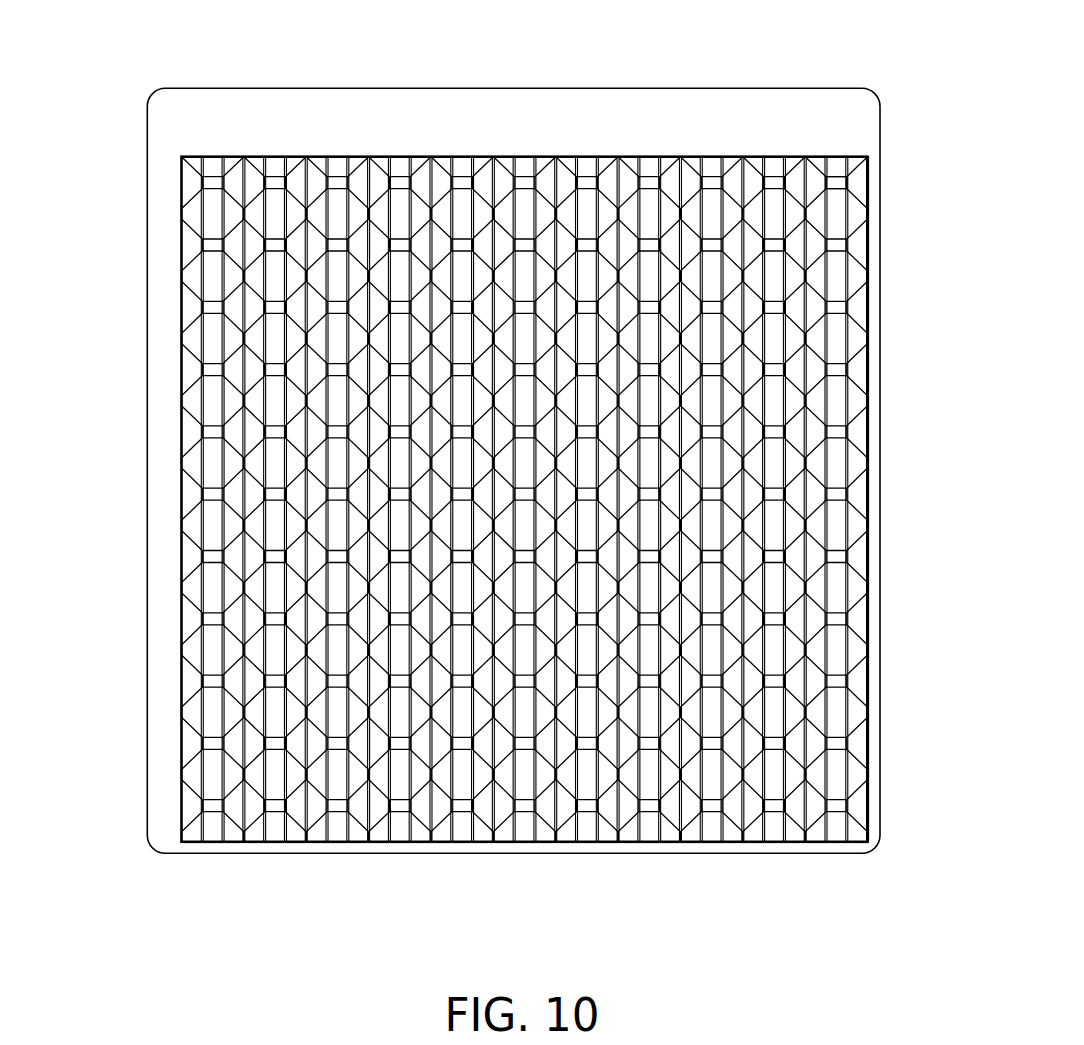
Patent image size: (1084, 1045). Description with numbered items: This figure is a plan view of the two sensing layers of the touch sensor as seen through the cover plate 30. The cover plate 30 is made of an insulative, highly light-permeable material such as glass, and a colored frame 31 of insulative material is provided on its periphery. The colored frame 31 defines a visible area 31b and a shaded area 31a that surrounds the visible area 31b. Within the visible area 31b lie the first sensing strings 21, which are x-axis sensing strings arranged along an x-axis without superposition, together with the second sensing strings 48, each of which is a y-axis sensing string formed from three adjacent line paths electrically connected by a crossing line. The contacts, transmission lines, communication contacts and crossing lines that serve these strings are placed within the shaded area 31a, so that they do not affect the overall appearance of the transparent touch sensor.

The first sensing string 21 is at (856, 247).
The cover plate 30 is at (461, 434).
The colored frame 31 is at (461, 470).
The shaded area 31a is at (461, 459).
The visible area 31b is at (195, 277).
The second sensing string 48 is at (834, 168).